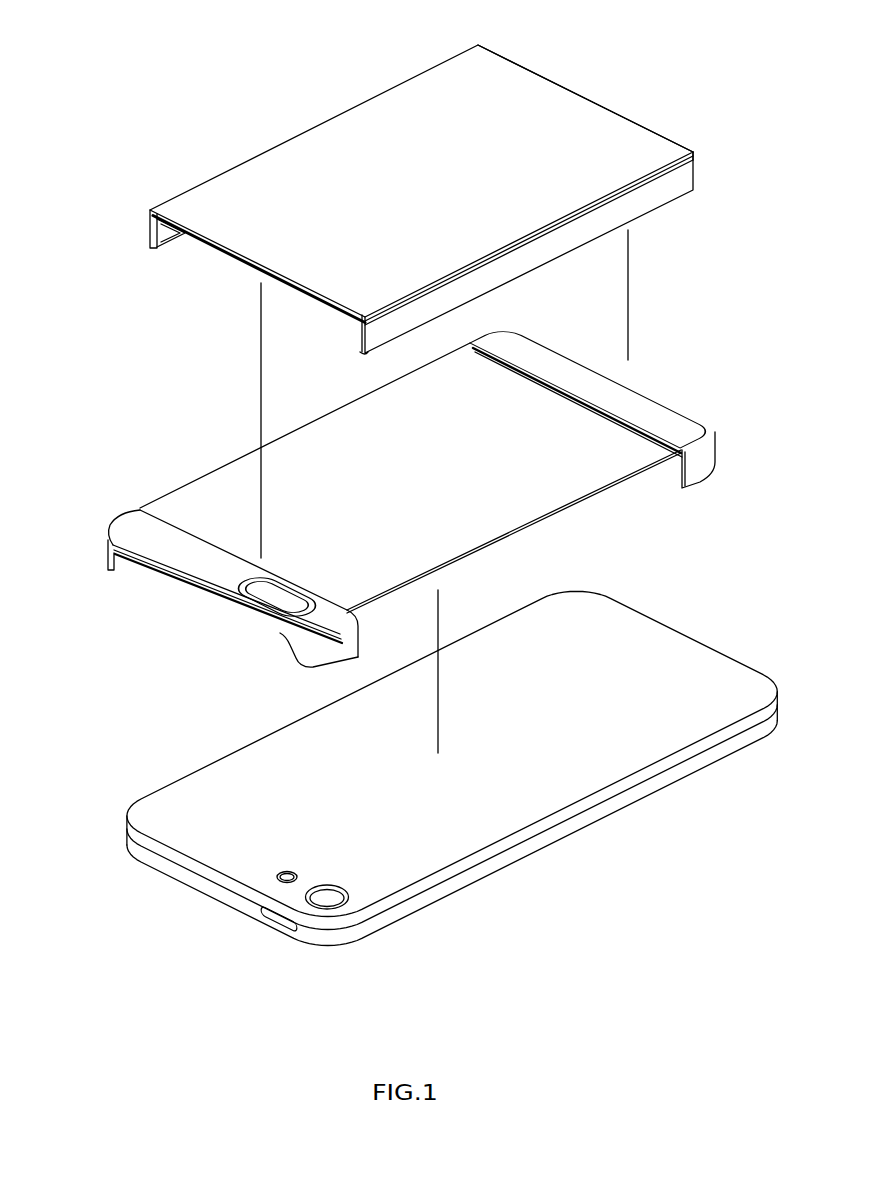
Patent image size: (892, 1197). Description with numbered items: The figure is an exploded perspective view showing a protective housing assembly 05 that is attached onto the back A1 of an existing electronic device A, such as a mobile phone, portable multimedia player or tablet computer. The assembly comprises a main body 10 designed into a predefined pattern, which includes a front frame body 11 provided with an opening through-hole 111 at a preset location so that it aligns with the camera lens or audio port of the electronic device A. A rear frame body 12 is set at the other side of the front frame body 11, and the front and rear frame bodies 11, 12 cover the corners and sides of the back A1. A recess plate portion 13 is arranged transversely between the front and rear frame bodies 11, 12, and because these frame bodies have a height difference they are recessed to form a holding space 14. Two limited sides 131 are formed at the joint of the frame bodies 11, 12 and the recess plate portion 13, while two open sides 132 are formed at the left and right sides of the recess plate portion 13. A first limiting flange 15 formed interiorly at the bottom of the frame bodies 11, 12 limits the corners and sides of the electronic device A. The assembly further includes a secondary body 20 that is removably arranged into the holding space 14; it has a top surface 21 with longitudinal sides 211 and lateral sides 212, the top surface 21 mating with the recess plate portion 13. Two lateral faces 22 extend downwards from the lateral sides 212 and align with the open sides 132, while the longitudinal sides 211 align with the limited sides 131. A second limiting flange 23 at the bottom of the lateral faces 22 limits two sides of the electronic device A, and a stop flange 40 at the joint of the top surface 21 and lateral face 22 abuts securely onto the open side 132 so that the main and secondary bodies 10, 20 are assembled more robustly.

The protective housing assembly 05 is at (182, 118).
The secondary body 20 is at (312, 112).
The top surface 21 is at (380, 135).
The longitudinal sides 211 is at (555, 82).
The lateral sides 212 is at (418, 78).
The lateral faces 22 is at (625, 208).
The second limiting flange 23 is at (160, 248).
The stop flange 40 is at (357, 318).
The main body 10 is at (237, 440).
The front frame body 11 is at (130, 522).
The opening through-hole 111 is at (240, 600).
The rear frame body 12 is at (653, 395).
The recess plate portion 13 is at (483, 520).
The limited sides 131 is at (530, 375).
The open sides 132 is at (503, 543).
The holding space 14 is at (588, 462).
The first limiting flange 15 is at (685, 470).
The electronic device A is at (533, 855).
The back A1 is at (562, 757).